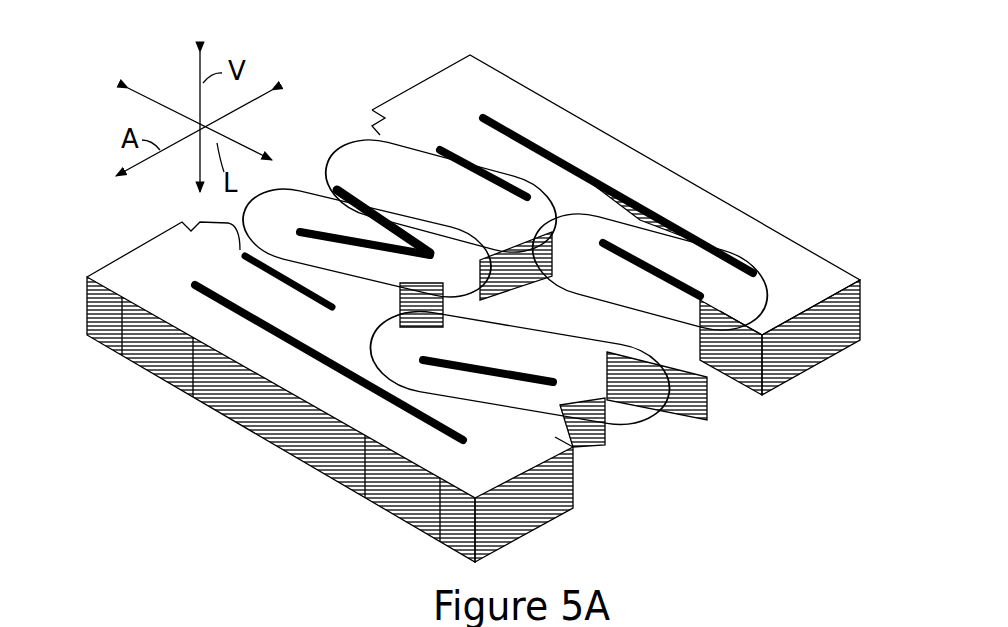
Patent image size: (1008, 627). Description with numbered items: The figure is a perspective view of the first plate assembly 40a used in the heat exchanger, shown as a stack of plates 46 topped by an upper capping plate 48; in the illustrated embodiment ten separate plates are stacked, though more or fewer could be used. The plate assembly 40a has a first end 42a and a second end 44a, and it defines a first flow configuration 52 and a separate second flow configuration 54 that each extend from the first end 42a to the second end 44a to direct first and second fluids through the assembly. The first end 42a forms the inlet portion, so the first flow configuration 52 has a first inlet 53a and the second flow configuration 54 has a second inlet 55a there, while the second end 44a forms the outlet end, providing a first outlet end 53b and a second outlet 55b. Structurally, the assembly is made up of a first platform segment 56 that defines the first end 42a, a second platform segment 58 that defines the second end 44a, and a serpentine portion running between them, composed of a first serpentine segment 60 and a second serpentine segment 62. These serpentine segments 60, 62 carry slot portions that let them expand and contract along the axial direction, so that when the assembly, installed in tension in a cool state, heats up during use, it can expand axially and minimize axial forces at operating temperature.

The first plate assembly 40a is at (720, 123).
The first end 42a is at (190, 458).
The second end 44a is at (703, 187).
The plates 46 is at (870, 290).
The upper capping plate 48 is at (827, 277).
The first flow configuration 52 is at (155, 352).
The first inlet 53a is at (168, 367).
The first outlet end 53b is at (790, 233).
The second flow configuration 54 is at (400, 493).
The second inlet 55a is at (415, 513).
The second outlet 55b is at (560, 105).
The first platform segment 56 is at (117, 260).
The second platform segment 58 is at (430, 72).
The first serpentine segment 60 is at (613, 417).
The second serpentine segment 62 is at (347, 163).